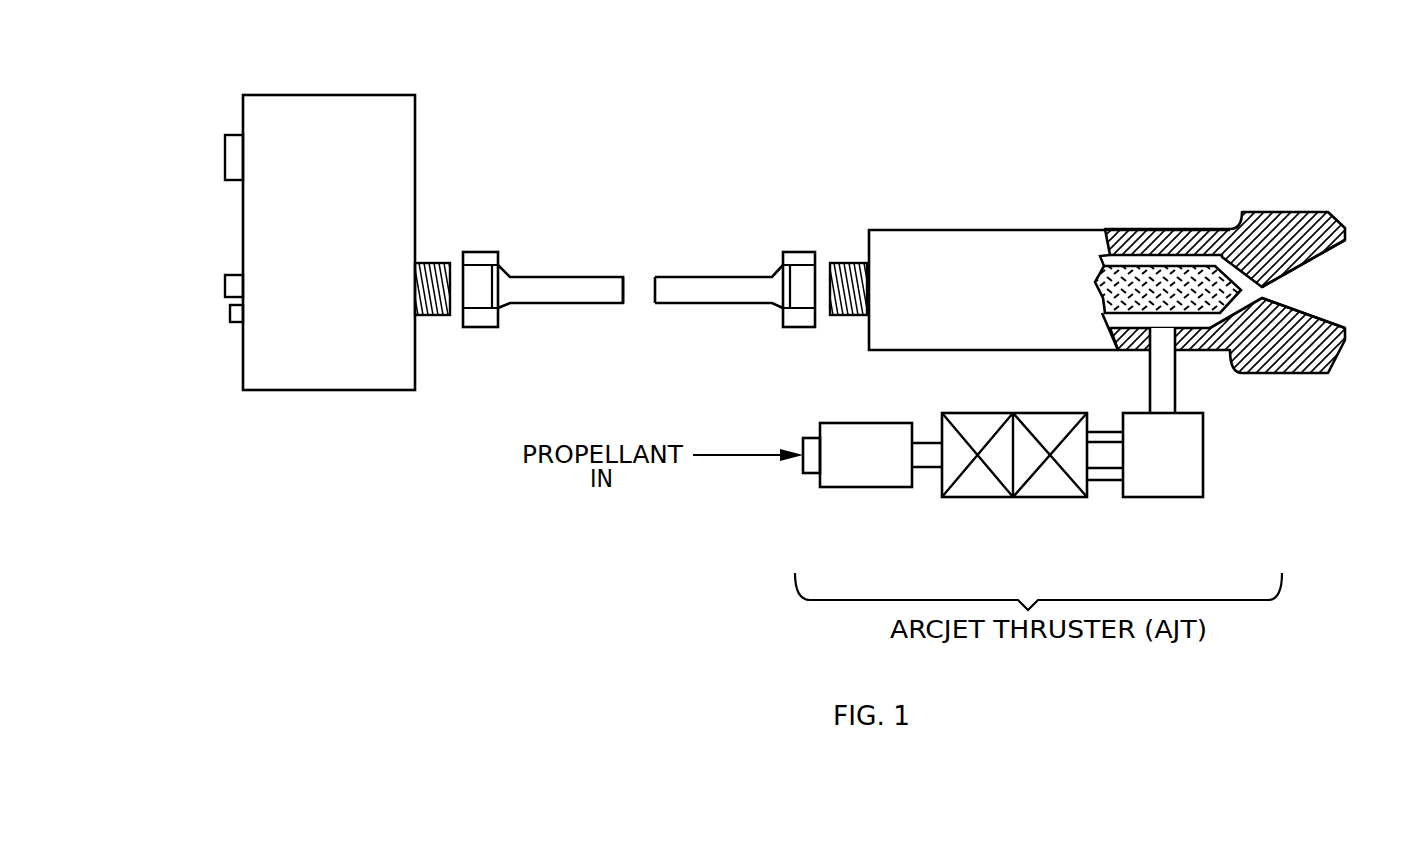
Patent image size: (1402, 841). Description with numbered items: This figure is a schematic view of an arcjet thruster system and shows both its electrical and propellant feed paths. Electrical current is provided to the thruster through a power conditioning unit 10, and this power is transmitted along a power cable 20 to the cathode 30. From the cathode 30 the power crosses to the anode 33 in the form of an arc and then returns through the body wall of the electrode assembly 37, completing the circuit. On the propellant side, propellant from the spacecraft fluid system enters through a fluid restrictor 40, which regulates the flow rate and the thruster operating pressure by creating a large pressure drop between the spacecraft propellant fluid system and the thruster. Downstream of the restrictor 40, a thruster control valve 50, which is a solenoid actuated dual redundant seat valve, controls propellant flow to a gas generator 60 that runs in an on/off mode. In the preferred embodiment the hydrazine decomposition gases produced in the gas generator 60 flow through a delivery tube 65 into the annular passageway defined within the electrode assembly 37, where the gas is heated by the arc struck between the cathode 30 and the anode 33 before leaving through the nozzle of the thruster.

The power conditioning unit 10 is at (318, 95).
The power cable 20 is at (577, 277).
The cathode 30 is at (1228, 256).
The anode 33 is at (1300, 313).
The electrode assembly 37 is at (1163, 227).
The fluid restrictor 40 is at (852, 487).
The thruster control valve 50 is at (1028, 498).
The gas generator 60 is at (1204, 481).
The delivery tube 65 is at (1177, 402).